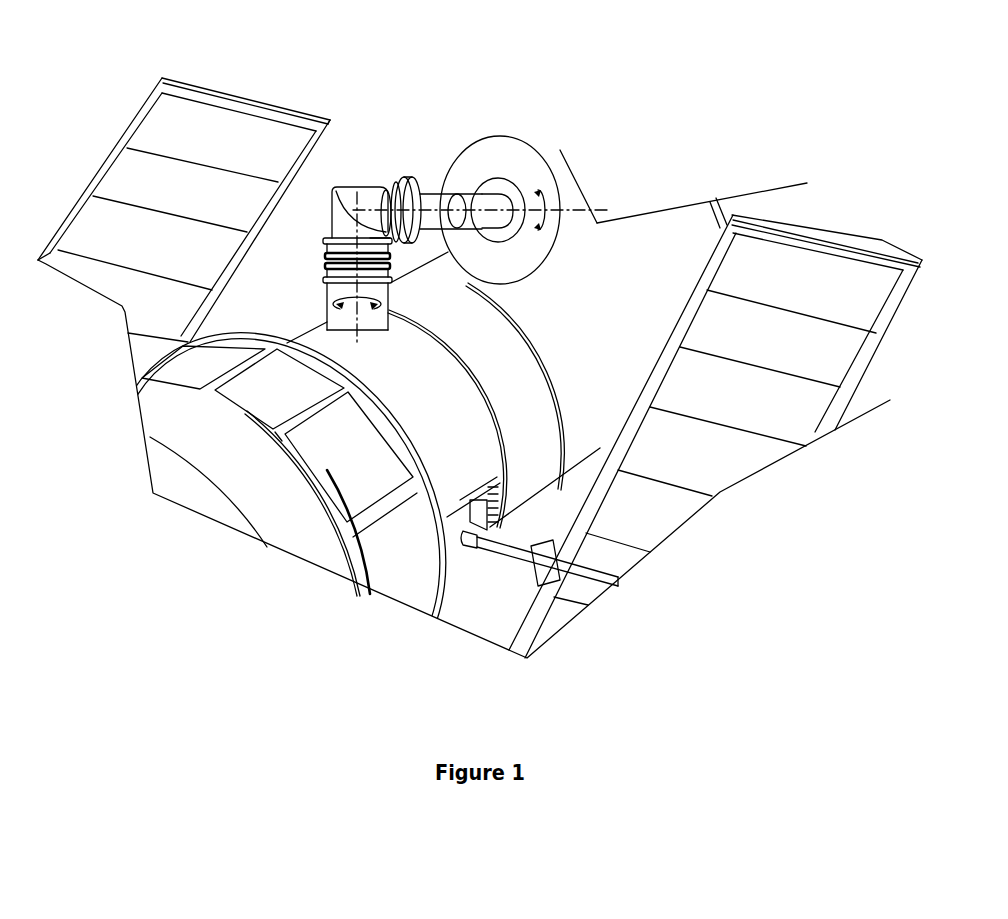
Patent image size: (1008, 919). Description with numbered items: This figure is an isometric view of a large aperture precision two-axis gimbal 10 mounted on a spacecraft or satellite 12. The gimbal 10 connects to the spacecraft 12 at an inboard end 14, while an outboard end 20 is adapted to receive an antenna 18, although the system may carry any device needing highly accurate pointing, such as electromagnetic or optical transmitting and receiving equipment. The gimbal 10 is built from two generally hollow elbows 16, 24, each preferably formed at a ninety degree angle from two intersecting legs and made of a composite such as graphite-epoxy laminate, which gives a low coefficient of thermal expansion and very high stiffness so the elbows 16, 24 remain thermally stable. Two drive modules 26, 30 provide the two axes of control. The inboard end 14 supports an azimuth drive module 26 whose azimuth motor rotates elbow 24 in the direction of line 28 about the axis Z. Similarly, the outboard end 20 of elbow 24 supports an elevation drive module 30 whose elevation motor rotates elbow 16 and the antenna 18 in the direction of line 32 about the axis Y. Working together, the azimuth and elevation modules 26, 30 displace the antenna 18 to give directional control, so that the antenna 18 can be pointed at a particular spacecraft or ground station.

The two-axis gimbal 10 is at (374, 66).
The spacecraft or satellite 12 is at (402, 582).
The inboard end 14 is at (325, 300).
The elbow 16 is at (433, 194).
The antenna 18 is at (492, 146).
The outboard end 20 is at (480, 226).
The elbow 24 is at (362, 192).
The azimuth drive module 26 is at (300, 218).
The line of rotation about axis Z 28 is at (374, 309).
The elevation drive module 30 is at (419, 252).
The line of rotation about axis Y 32 is at (540, 230).